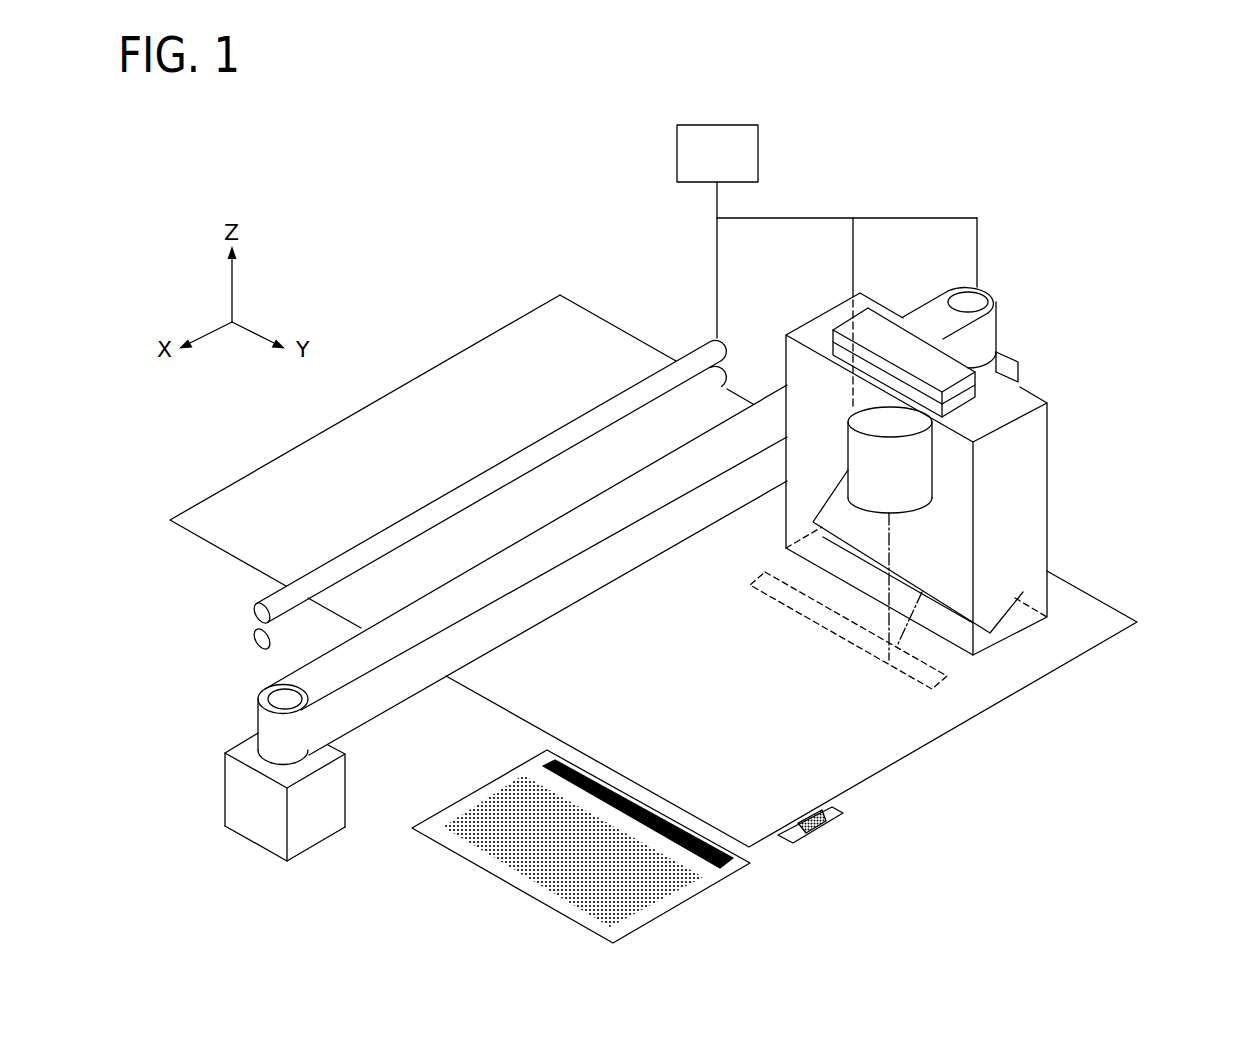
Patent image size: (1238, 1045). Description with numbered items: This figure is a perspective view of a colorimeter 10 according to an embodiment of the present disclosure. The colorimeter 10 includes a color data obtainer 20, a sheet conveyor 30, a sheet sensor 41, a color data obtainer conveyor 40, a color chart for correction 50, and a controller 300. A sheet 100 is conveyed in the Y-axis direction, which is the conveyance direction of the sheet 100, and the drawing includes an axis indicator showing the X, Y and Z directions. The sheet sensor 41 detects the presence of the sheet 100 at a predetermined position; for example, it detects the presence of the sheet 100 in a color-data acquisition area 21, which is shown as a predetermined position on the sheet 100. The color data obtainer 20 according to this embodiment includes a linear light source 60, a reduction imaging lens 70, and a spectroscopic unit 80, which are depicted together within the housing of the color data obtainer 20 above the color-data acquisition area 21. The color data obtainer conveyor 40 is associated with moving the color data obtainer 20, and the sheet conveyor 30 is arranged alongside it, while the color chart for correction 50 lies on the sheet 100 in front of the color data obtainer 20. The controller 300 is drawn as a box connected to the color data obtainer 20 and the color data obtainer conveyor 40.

The colorimeter 10 is at (347, 180).
The color data obtainer 20 is at (1134, 413).
The color-data acquisition area 21 is at (945, 678).
The sheet conveyor 30 is at (262, 604).
The color data obtainer conveyor 40 is at (262, 693).
The sheet sensor 41 is at (832, 824).
The color chart for correction 50 is at (716, 903).
The linear light source 60 is at (993, 550).
The reduction imaging lens 70 is at (936, 468).
The spectroscopic unit 80 is at (1003, 398).
The sheet 100 is at (1056, 728).
The controller 300 is at (742, 124).